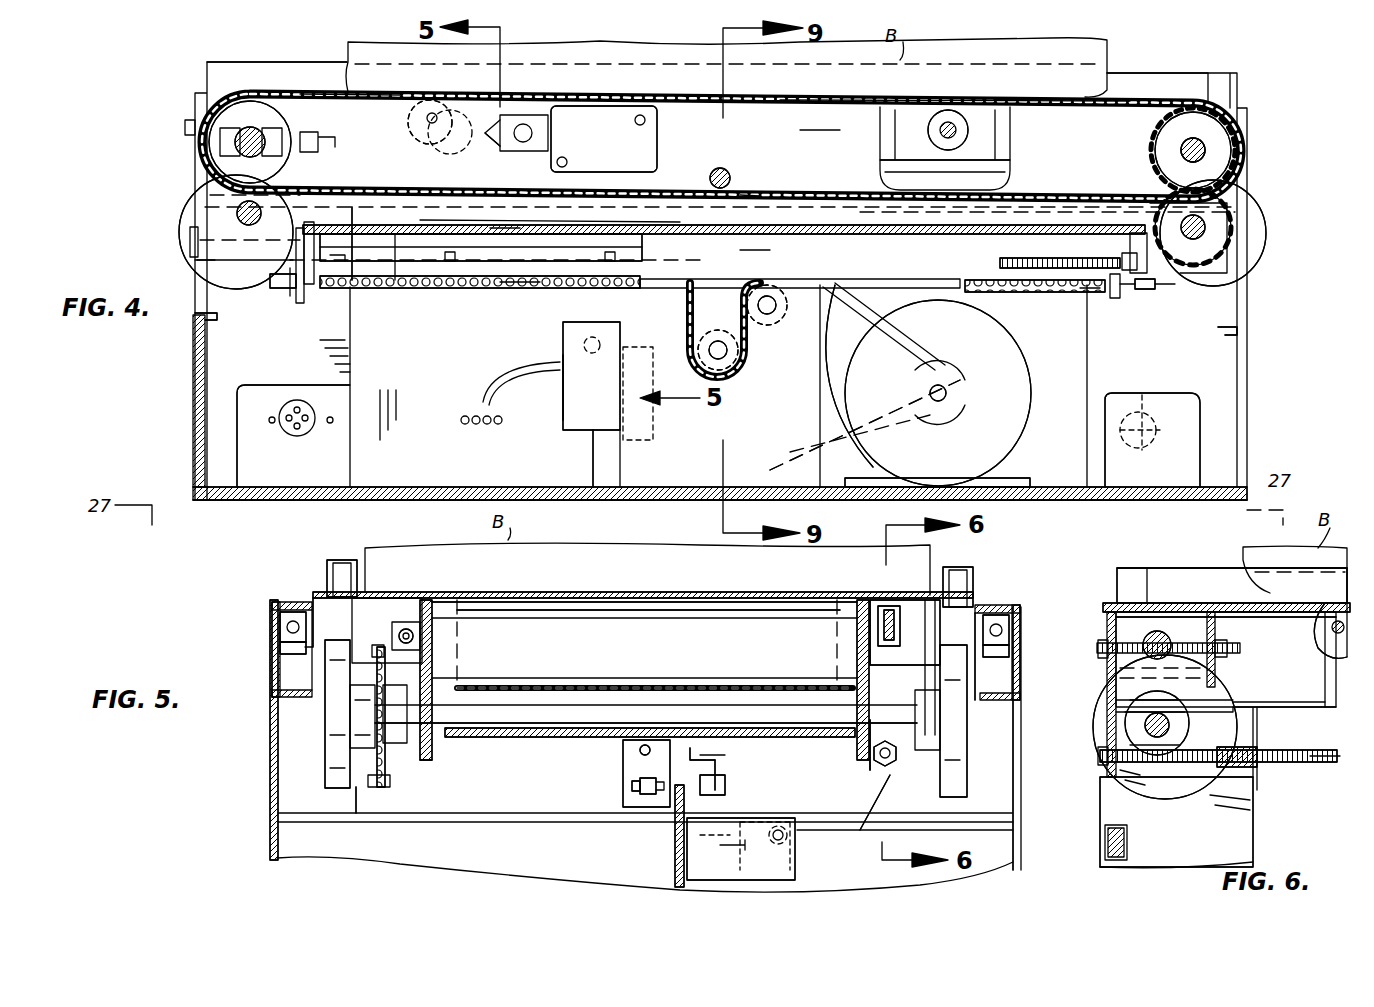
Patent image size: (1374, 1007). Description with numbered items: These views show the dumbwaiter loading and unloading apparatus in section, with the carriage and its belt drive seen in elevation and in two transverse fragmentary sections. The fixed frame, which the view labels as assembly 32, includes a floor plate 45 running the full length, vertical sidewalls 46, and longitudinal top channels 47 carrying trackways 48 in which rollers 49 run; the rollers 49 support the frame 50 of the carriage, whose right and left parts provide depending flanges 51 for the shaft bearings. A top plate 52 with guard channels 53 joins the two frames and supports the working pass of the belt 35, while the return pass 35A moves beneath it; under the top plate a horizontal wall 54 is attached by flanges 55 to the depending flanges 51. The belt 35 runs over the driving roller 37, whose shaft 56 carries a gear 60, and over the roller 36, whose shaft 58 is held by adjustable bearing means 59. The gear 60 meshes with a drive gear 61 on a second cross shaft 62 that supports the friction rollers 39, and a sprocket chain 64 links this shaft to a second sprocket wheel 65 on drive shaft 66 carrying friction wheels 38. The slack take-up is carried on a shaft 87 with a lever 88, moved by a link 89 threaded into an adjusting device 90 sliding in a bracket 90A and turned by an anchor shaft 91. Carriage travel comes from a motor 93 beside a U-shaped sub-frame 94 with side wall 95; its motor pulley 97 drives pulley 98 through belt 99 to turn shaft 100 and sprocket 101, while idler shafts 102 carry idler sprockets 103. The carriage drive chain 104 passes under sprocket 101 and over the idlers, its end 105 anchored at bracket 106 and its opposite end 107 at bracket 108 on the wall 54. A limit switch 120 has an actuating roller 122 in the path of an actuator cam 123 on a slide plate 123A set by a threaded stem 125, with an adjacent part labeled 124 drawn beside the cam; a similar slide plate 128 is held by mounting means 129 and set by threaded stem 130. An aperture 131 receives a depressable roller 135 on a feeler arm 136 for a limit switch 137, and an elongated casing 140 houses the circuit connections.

In FIG. 4, the conveyor frame 32 is at (300, 55).
In FIG. 4, the belt 35 is at (1125, 80).
In FIG. 5, the belt 35 is at (695, 592).
In FIG. 5, the return pass of the belt 35A is at (753, 665).
In FIG. 4, the roller 36 is at (302, 95).
In FIG. 5, the roller 36 is at (540, 652).
In FIG. 4, the belt driving roller 37 is at (1152, 149).
In FIG. 4, the friction wheels 38 is at (195, 205).
In FIG. 5, the friction wheels 38 is at (335, 718).
In FIG. 6, the friction wheels 38 is at (1093, 755).
In FIG. 4, the friction rollers 39 is at (1232, 226).
In FIG. 4, the floor plate 45 is at (290, 500).
In FIG. 4, the vertical sidewalls 46 is at (207, 350).
In FIG. 5, the vertical sidewalls 46 is at (270, 778).
In FIG. 6, the vertical sidewalls 46 is at (1253, 850).
In FIG. 5, the longitudinal top channels 47 is at (272, 648).
In FIG. 4, the trackways 48 is at (985, 163).
In FIG. 5, the trackways 48 is at (285, 672).
In FIG. 4, the rollers 49 is at (502, 108).
In FIG. 5, the rollers 49 is at (282, 612).
In FIG. 5, the frame of the carriage 50 is at (320, 592).
In FIG. 6, the frame of the carriage 50 is at (1110, 603).
In FIG. 4, the depending flanges 51 is at (821, 134).
In FIG. 5, the depending flanges 51 is at (440, 670).
In FIG. 4, the top plate 52 is at (756, 106).
In FIG. 5, the top plate 52 is at (610, 612).
In FIG. 6, the top plate 52 is at (1170, 603).
In FIG. 4, the guard channels 53 is at (1145, 82).
In FIG. 5, the guard channels 53 is at (342, 558).
In FIG. 6, the guard channels 53 is at (1205, 595).
In FIG. 4, the horizontal wall 54 is at (432, 220).
In FIG. 5, the horizontal wall 54 is at (545, 738).
In FIG. 5, the flanges 55 is at (430, 760).
In FIG. 4, the shaft 56 is at (1225, 148).
In FIG. 4, the shaft 58 is at (236, 130).
In FIG. 6, the shaft 58 is at (1143, 638).
In FIG. 4, the adjustable bearing means 59 is at (250, 125).
In FIG. 5, the adjustable bearing means 59 is at (398, 623).
In FIG. 4, the gear 60 is at (1152, 170).
In FIG. 4, the drive gear 61 is at (1240, 272).
In FIG. 4, the second cross shaft 62 is at (1235, 245).
In FIG. 5, the sprocket chain 64 is at (366, 790).
In FIG. 5, the second sprocket wheel 65 is at (395, 770).
In FIG. 4, the drive shaft 66 is at (235, 210).
In FIG. 5, the drive shaft 66 is at (492, 720).
In FIG. 6, the drive shaft 66 is at (1157, 745).
In FIG. 4, the shaft 87 is at (722, 170).
In FIG. 4, the lever 88 is at (745, 192).
In FIG. 4, the link 89 is at (750, 247).
In FIG. 5, the link 89 is at (865, 814).
In FIG. 6, the link 89 is at (1340, 765).
In FIG. 5, the adjusting device 90 is at (880, 768).
In FIG. 6, the adjusting device 90 is at (1298, 765).
In FIG. 5, the bracket 90A is at (900, 775).
In FIG. 6, the bracket 90A is at (1260, 747).
In FIG. 4, the anchor shaft 91 is at (205, 262).
In FIG. 6, the anchor shaft 91 is at (1195, 775).
In FIG. 4, the motor 93 is at (1030, 380).
In FIG. 4, the U-shaped sub-frame 94 is at (1035, 479).
In FIG. 4, the side wall 95 is at (660, 503).
In FIG. 5, the side wall 95 is at (675, 862).
In FIG. 4, the motor pulley 97 is at (925, 385).
In FIG. 4, the pulley 98 is at (847, 353).
In FIG. 4, the belt 99 is at (835, 445).
In FIG. 4, the shaft 100 is at (745, 347).
In FIG. 4, the sprocket 101 is at (730, 372).
In FIG. 4, the idler shafts 102 is at (700, 335).
In FIG. 4, the idler sprocket 103 is at (752, 300).
In FIG. 4, the carriage drive chain 104 is at (518, 288).
In FIG. 5, the carriage drive chain 104 is at (642, 797).
In FIG. 4, the end of the chain 105 is at (1082, 296).
In FIG. 4, the bracket 106 is at (1148, 316).
In FIG. 4, the opposite end of the chain 107 is at (352, 288).
In FIG. 4, the bracket 108 is at (310, 290).
In FIG. 5, the bracket 108 is at (620, 795).
In FIG. 4, the limit switch 120 is at (575, 385).
In FIG. 5, the limit switch 120 is at (795, 872).
In FIG. 4, the actuating roller 122 is at (612, 298).
In FIG. 5, the actuating roller 122 is at (727, 800).
In FIG. 4, the actuator cam 123 is at (500, 224).
In FIG. 5, the actuator cam 123 is at (622, 748).
In FIG. 4, the slide plate 123A is at (530, 373).
In FIG. 5, the slide plate 123A is at (725, 772).
In FIG. 4, the carriage 124 is at (597, 250).
In FIG. 5, the carriage 124 is at (700, 757).
In FIG. 4, the threaded stem 125 is at (398, 288).
In FIG. 5, the threaded stem 125 is at (645, 746).
In FIG. 4, the slide plate 128 is at (915, 233).
In FIG. 4, the mounting means 129 is at (998, 263).
In FIG. 4, the threaded stem 130 is at (1000, 294).
In FIG. 5, the aperture 131 is at (910, 615).
In FIG. 6, the aperture 131 is at (1298, 618).
In FIG. 4, the depressable roller 135 is at (422, 135).
In FIG. 5, the depressable roller 135 is at (885, 600).
In FIG. 6, the depressable roller 135 is at (1318, 646).
In FIG. 4, the feeler arm 136 is at (485, 150).
In FIG. 5, the feeler arm 136 is at (870, 630).
In FIG. 4, the limit switch 137 is at (613, 150).
In FIG. 4, the elongated casing 140 is at (380, 392).